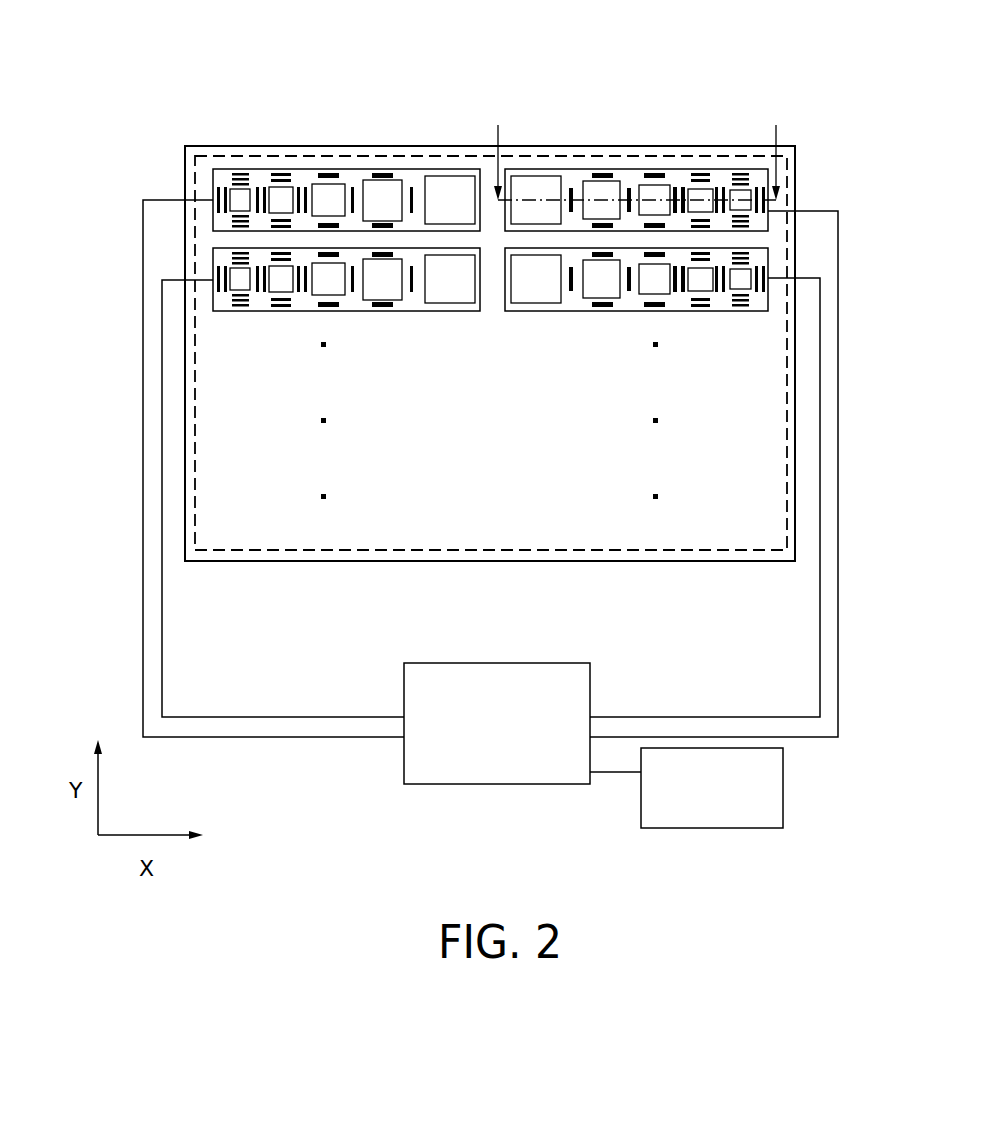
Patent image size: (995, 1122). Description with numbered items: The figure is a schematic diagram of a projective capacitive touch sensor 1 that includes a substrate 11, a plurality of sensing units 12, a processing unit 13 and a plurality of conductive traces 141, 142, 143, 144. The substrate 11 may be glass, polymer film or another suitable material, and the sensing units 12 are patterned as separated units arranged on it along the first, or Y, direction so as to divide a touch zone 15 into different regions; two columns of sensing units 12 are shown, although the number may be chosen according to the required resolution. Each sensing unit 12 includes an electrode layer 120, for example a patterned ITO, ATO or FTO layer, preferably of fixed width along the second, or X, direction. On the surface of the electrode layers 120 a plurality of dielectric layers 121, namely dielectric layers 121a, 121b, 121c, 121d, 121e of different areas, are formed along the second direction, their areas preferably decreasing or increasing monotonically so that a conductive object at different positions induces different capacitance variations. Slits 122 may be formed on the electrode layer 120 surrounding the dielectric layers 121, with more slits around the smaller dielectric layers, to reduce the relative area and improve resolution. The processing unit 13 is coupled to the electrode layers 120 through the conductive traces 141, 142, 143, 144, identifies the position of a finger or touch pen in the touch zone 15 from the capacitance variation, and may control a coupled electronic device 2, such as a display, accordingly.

The projective capacitive touch sensor 1 is at (803, 63).
The substrate 11 is at (185, 148).
The sensing unit 12 is at (346, 158).
The electrode layer 120 is at (346, 159).
The dielectric layer 121 is at (647, 133).
The dielectric layer 121a is at (522, 176).
The dielectric layer 121b is at (587, 181).
The dielectric layer 121c is at (642, 185).
The dielectric layer 121d is at (689, 189).
The dielectric layer 121e is at (758, 162).
The slit 122 is at (382, 177).
The processing unit 13 is at (405, 770).
The conductive trace 141 is at (143, 272).
The conductive trace 142 is at (162, 375).
The conductive trace 143 is at (838, 387).
The conductive trace 144 is at (819, 440).
The touch zone 15 is at (195, 452).
The electronic device 2 is at (783, 802).